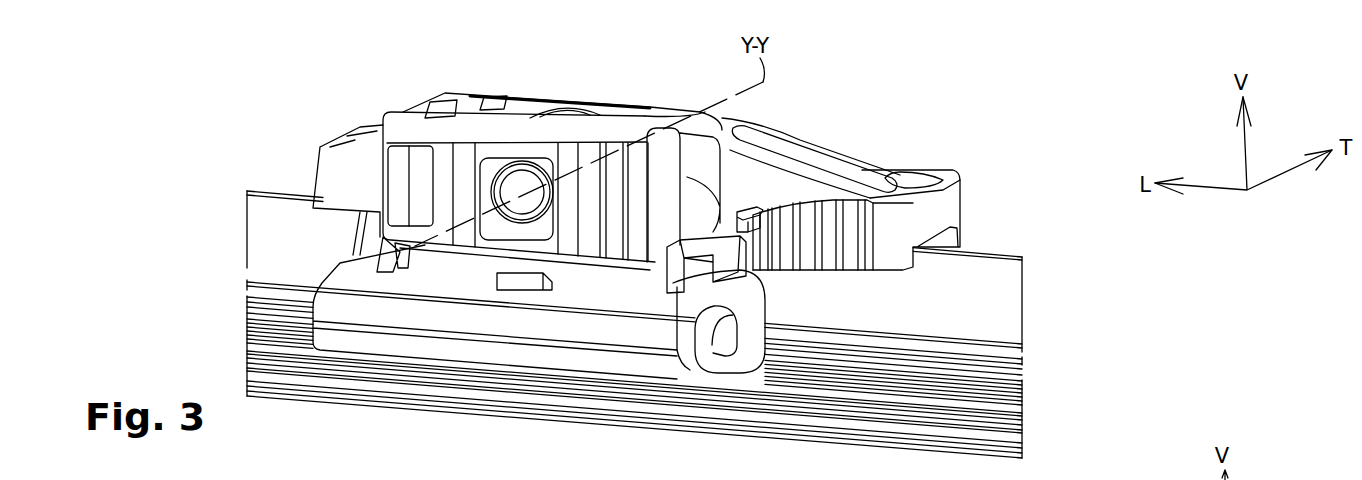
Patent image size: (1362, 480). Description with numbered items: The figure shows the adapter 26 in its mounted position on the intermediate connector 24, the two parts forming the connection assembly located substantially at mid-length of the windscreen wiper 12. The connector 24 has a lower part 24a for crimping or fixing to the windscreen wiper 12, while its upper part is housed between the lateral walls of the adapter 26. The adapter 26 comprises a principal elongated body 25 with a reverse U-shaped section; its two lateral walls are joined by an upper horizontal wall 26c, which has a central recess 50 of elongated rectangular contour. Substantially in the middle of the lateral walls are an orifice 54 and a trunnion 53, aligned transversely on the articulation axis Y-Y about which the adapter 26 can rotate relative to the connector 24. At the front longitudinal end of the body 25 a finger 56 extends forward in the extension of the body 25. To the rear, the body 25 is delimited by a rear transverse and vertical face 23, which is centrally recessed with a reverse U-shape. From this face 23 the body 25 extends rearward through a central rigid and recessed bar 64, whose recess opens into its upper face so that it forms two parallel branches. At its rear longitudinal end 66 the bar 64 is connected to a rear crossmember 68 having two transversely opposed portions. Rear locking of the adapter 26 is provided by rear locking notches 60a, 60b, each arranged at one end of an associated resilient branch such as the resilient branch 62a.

The windscreen wiper 12 is at (1030, 310).
The rear transverse and vertical face 23 is at (683, 163).
The intermediate connector 24 is at (397, 313).
The lower part 24a is at (747, 330).
The principal elongated body 25 is at (672, 110).
The adapter 26 is at (914, 185).
The upper horizontal wall 26c is at (467, 105).
The central recess 50 is at (495, 97).
The trunnion 53 is at (580, 127).
The orifice 54 is at (488, 185).
The finger 56 is at (330, 167).
The rear locking notch 60a is at (698, 265).
The rear locking notch 60b is at (763, 210).
The resilient branch 62a is at (843, 275).
The central rigid and recessed bar 64 is at (817, 140).
The rear longitudinal end 66 is at (947, 170).
The rear crossmember 68 is at (950, 210).